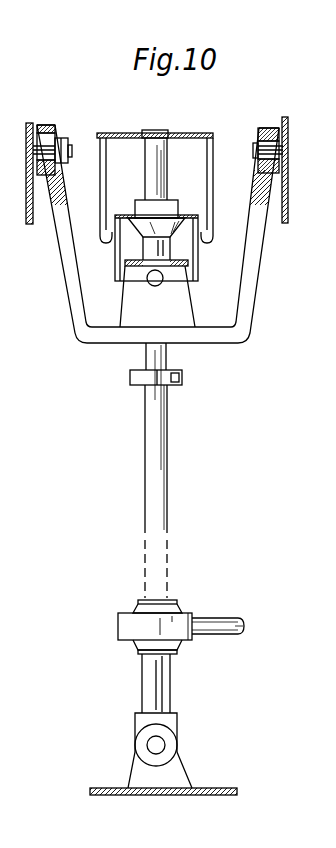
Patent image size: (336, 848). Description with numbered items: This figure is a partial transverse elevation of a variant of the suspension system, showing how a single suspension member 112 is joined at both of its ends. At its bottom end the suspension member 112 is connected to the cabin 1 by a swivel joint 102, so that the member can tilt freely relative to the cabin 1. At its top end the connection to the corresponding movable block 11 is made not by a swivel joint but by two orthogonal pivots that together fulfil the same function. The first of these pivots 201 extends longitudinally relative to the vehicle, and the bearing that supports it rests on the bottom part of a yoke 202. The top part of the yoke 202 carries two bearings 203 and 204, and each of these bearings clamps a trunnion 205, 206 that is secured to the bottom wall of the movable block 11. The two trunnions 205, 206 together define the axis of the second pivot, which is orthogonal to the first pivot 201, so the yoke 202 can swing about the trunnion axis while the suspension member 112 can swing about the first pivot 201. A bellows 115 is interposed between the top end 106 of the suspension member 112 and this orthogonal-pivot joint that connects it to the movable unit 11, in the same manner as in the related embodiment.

The cabin 1 is at (203, 788).
The movable block 11 is at (28, 225).
The swivel joint 102 is at (160, 747).
The top end of the suspension member 106 is at (157, 130).
The suspension member 112 is at (143, 680).
The bellows 115 is at (183, 157).
The first pivot 201 is at (154, 282).
The yoke 202 is at (72, 297).
The bearing 203 is at (56, 138).
The bearing 204 is at (258, 130).
The trunnion 205 is at (28, 136).
The trunnion 206 is at (268, 148).